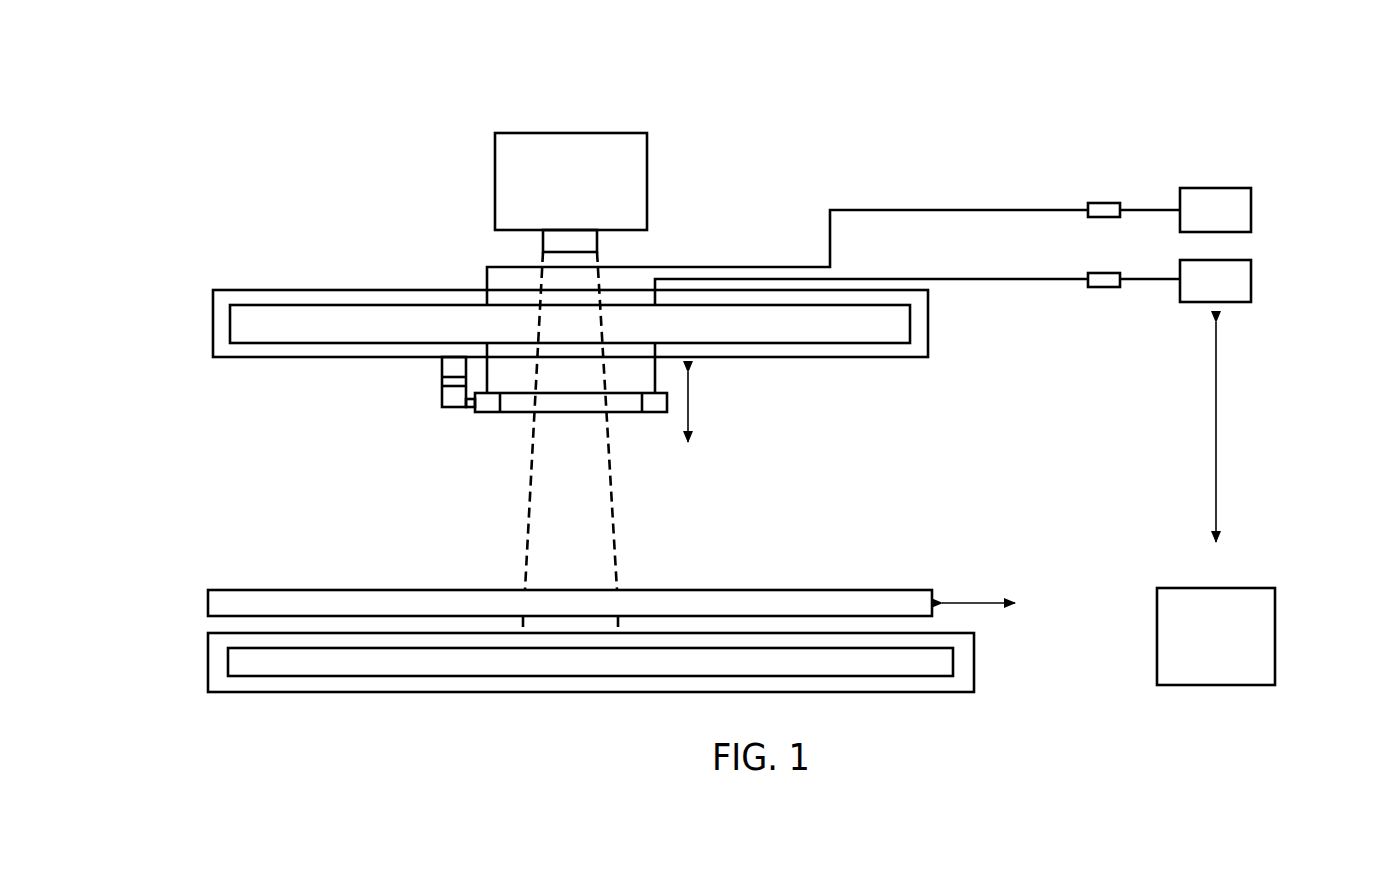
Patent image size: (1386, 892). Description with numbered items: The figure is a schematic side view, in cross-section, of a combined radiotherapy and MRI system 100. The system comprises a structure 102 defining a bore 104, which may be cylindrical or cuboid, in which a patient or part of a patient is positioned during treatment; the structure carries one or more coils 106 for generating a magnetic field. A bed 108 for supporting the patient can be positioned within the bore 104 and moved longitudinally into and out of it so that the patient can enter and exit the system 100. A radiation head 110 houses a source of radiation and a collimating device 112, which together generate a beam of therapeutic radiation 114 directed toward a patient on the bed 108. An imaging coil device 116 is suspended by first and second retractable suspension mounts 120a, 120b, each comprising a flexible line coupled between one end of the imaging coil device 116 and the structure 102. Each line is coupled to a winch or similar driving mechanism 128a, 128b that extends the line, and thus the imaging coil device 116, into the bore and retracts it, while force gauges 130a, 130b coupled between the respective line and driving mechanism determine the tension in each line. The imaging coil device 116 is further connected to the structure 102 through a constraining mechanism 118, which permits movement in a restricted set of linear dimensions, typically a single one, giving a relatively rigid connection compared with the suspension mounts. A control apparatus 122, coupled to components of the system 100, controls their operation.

The combined radiotherapy and MRI system 100 is at (205, 240).
The structure 102 is at (213, 335).
The bore 104 is at (275, 458).
The coils 106 is at (887, 305).
The bed 108 is at (232, 590).
The radiation head 110 is at (484, 150).
The collimating device 112 is at (598, 239).
The beam of therapeutic radiation 114 is at (520, 560).
The imaging coil device 116 is at (494, 433).
The constraining mechanism 118 is at (442, 380).
The first retractable suspension mount 120a is at (515, 373).
The second retractable suspension mount 120b is at (655, 372).
The control apparatus 122 is at (1180, 588).
The driving mechanism 128a is at (1232, 188).
The driving mechanism 128b is at (1252, 277).
The force gauge 130a is at (1100, 203).
The force gauge 130b is at (1105, 288).